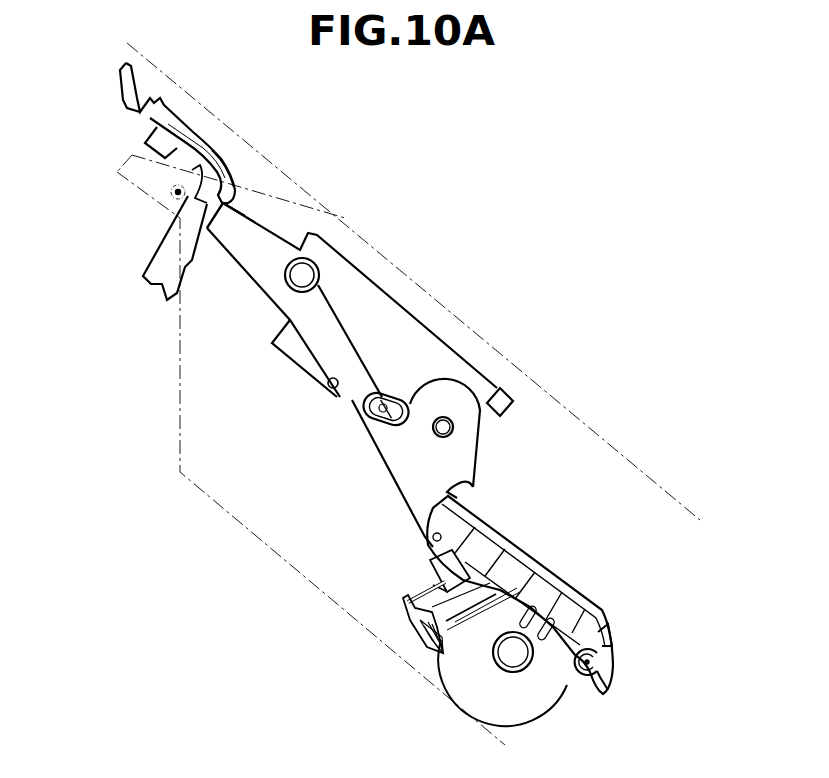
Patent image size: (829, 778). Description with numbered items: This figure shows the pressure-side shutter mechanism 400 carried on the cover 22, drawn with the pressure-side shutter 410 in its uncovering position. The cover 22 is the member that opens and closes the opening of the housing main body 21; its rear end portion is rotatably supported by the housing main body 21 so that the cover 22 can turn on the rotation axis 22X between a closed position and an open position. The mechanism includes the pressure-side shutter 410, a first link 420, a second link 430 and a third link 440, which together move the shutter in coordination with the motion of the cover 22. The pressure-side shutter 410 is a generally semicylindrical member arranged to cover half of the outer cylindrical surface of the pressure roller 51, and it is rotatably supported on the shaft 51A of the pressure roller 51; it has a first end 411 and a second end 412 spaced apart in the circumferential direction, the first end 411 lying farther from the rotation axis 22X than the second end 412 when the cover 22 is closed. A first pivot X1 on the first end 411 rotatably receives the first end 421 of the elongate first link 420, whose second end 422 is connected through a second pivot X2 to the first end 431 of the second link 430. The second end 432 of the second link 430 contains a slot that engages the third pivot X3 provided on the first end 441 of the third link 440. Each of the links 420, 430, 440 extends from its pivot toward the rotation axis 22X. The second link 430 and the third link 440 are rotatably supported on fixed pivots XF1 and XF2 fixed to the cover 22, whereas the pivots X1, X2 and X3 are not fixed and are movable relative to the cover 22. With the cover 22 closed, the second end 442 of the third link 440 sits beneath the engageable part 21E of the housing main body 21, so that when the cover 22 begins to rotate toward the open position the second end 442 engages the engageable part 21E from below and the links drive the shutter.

The housing main body 21 is at (213, 103).
The engageable part 21E is at (240, 177).
The rotation axis 22X is at (178, 192).
The cover 22 is at (413, 278).
The second end of third link 442 is at (240, 210).
The third link 440 is at (248, 277).
The first end of third link 441 is at (357, 391).
The fixed pivot XF2 is at (303, 276).
The second end of second link 432 is at (393, 393).
The third pivot X3 is at (367, 416).
The pressure-side shutter mechanism 400 is at (463, 347).
The fixed pivot XF1 is at (443, 427).
The second link 430 is at (383, 470).
The second end of first link 422 is at (462, 486).
The first link 420 is at (533, 540).
The first end of second link 431 is at (420, 540).
The second pivot X2 is at (423, 556).
The second end of pressure-side shutter 412 is at (407, 600).
The pressure-side shutter 410 is at (422, 640).
The first end of first link 421 is at (603, 643).
The first pivot X1 is at (590, 664).
The first end of pressure-side shutter 411 is at (617, 670).
The shaft 51A is at (518, 660).
The pressure roller 51 is at (553, 695).